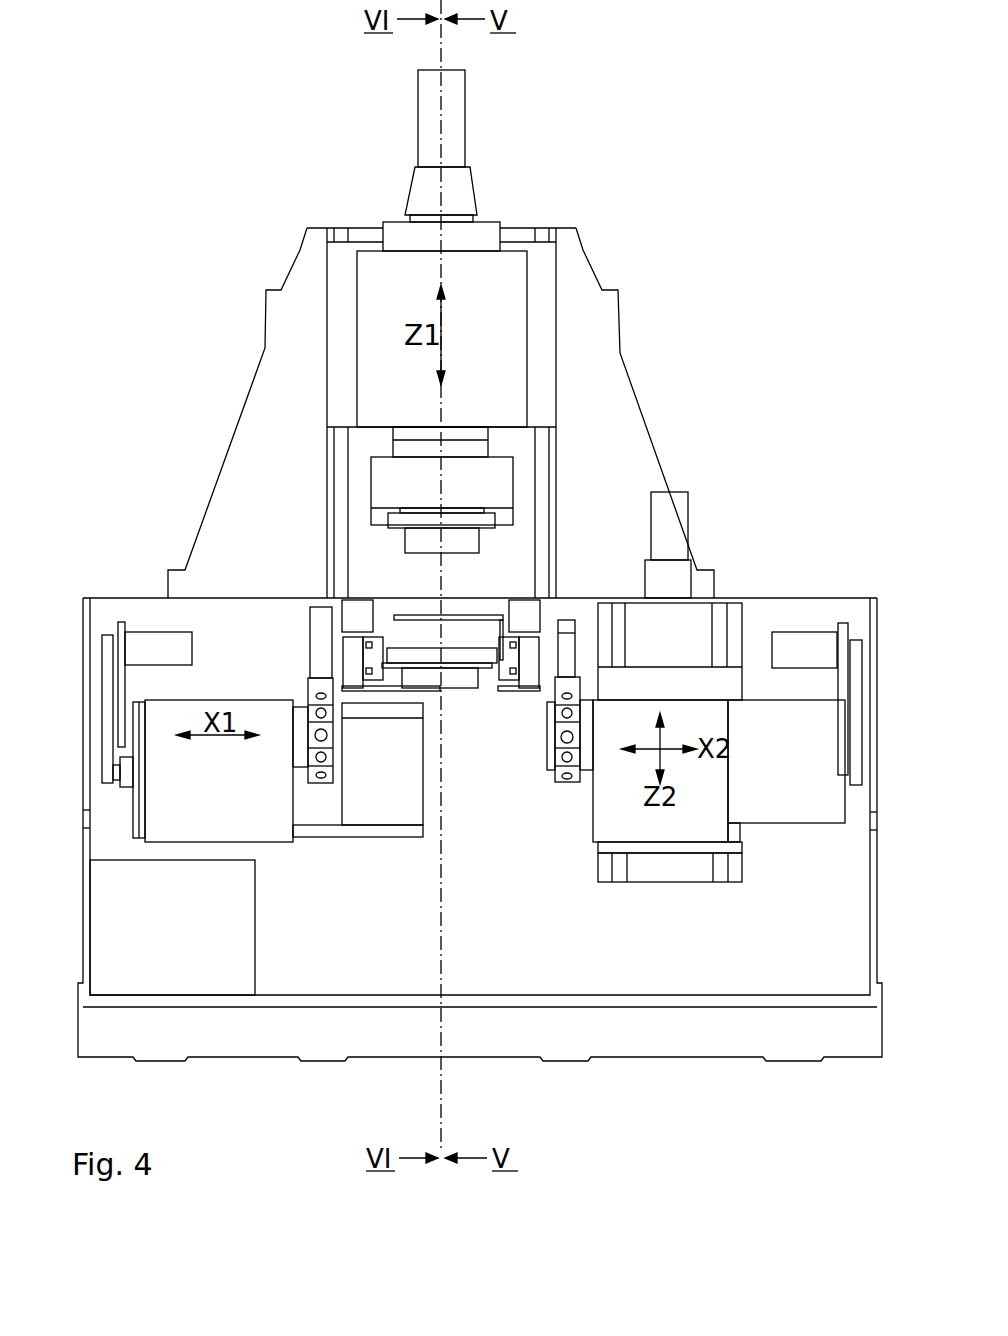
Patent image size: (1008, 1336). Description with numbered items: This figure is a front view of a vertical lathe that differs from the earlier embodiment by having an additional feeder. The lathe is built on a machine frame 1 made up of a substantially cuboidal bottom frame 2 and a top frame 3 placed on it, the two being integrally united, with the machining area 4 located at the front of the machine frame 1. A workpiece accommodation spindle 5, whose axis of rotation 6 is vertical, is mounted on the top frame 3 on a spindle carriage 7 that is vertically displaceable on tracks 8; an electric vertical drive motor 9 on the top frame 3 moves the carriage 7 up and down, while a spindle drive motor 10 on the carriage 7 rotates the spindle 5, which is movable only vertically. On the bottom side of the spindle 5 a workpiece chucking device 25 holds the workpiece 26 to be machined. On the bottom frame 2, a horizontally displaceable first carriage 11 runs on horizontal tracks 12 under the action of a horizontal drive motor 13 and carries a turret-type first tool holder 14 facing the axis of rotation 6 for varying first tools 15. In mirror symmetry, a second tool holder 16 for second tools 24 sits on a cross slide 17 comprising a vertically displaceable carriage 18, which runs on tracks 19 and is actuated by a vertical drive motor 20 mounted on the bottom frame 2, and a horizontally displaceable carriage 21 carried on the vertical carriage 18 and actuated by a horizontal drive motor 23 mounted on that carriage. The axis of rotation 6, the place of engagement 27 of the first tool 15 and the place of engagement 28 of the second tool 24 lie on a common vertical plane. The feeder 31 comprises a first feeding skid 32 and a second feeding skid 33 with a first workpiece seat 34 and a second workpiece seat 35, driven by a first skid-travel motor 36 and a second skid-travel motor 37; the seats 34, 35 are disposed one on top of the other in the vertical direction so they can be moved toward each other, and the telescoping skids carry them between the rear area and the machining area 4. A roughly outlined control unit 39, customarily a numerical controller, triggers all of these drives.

The machine frame 1 is at (655, 340).
The bottom frame 2 is at (735, 985).
The top frame 3 is at (262, 421).
The machining area 4 is at (503, 665).
The workpiece accommodation spindle 5 is at (485, 448).
The axis of rotation 6 is at (445, 396).
The spindle carriage 7 is at (522, 315).
The tracks 8 is at (338, 448).
The Z1 drive motor 9 is at (457, 125).
The spindle drive motor 10 is at (487, 231).
The X1 carriage 11 is at (198, 830).
The horizontal tracks 12 is at (321, 786).
The X1 drive motor 13 is at (147, 637).
The first tool holder 14 is at (297, 698).
The first tools 15 is at (310, 620).
The second tool holder 16 is at (573, 785).
The cross slide 17 is at (744, 840).
The Z2 carriage 18 is at (822, 642).
The tracks 19 is at (722, 872).
The Z2 drive motor 20 is at (680, 528).
The X2 carriage 21 is at (712, 833).
The X2 drive motor 23 is at (856, 640).
The second tools 24 is at (733, 677).
The workpiece chucking device 25 is at (508, 475).
The workpiece 26 is at (395, 520).
The place of engagement 27 is at (379, 682).
The place of engagement 28 is at (568, 633).
The feeder 31 is at (453, 697).
The first feeding skid 32 is at (357, 712).
The second feeding skid 33 is at (495, 686).
The first workpiece seat 34 is at (408, 690).
The second workpiece seat 35 is at (527, 610).
The first skid-travel motor 36 is at (388, 700).
The second skid-travel motor 37 is at (566, 620).
The control unit 39 is at (182, 975).